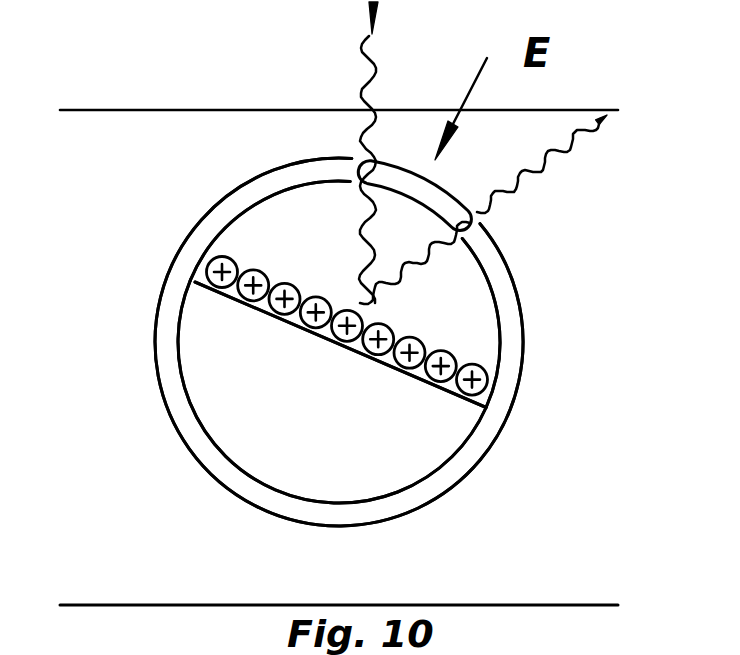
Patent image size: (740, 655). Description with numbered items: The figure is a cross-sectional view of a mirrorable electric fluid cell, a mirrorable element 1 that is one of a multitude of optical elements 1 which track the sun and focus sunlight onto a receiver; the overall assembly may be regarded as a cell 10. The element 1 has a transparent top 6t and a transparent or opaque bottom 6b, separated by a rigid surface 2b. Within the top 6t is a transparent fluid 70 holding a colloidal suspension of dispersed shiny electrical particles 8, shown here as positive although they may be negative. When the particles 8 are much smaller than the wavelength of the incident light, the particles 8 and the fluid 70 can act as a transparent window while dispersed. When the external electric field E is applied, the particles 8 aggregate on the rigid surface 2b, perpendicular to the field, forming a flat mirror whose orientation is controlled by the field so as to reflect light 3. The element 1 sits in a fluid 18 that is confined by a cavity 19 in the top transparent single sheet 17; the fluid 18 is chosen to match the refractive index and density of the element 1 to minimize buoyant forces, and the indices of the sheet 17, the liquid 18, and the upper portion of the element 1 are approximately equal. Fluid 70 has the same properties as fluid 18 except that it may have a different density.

The mirrorable element 1 is at (330, 442).
The rigid surface 2b is at (300, 323).
The light 3 is at (357, 65).
The transparent top 6t is at (298, 215).
The bottom 6b is at (242, 407).
The shiny electrical particles 8 is at (320, 300).
The display element (ball) 10 is at (167, 520).
The top transparent single sheet 17 is at (142, 163).
The fluid 18 is at (510, 328).
The cavity 19 is at (518, 398).
The transparent fluid 70 is at (440, 292).